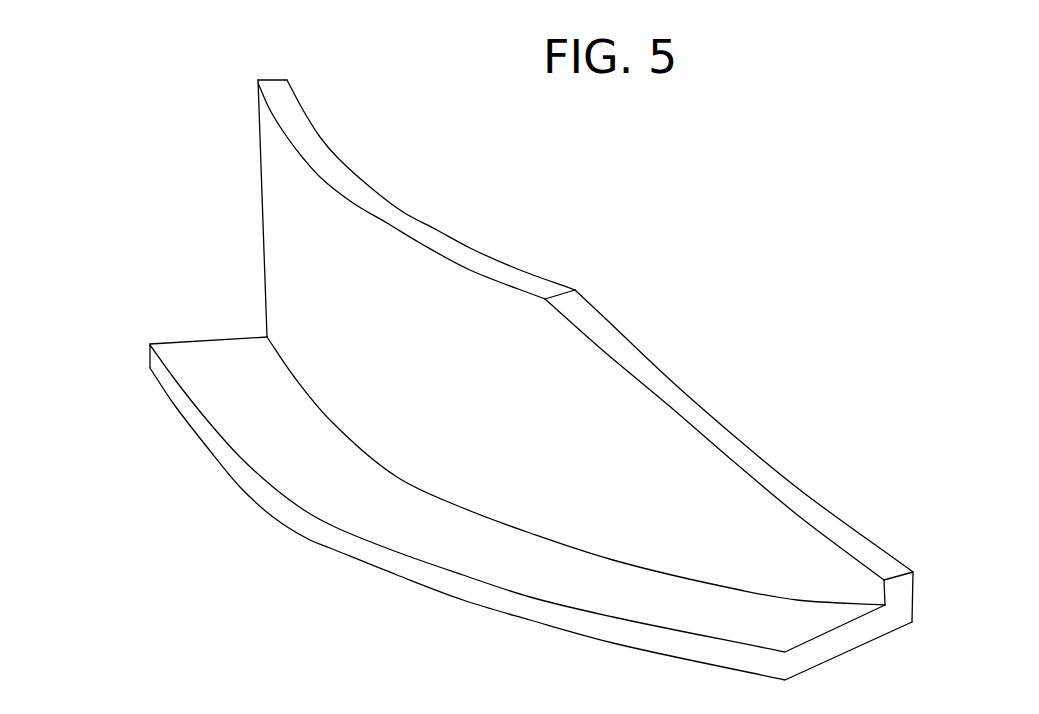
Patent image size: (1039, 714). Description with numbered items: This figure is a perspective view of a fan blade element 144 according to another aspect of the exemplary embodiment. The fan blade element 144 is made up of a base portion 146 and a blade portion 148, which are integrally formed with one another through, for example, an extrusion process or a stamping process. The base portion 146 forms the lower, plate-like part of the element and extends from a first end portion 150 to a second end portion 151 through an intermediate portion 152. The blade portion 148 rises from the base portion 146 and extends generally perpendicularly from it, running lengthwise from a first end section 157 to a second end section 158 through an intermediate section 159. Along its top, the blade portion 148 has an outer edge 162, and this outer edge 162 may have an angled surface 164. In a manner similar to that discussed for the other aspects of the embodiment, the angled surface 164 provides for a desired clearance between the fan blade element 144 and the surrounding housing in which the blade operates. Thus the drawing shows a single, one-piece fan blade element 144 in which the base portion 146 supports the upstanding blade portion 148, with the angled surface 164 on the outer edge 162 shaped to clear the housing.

The fan blade element 144 is at (222, 599).
The base portion 146 is at (168, 320).
The blade portion 148 is at (130, 128).
The first end portion 150 is at (266, 333).
The second end portion 151 is at (293, 511).
The intermediate portion 152 is at (308, 470).
The first end section 157 is at (273, 77).
The second end section 158 is at (897, 588).
The intermediate section 159 is at (448, 292).
The outer edge 162 is at (370, 184).
The angled surface 164 is at (610, 342).